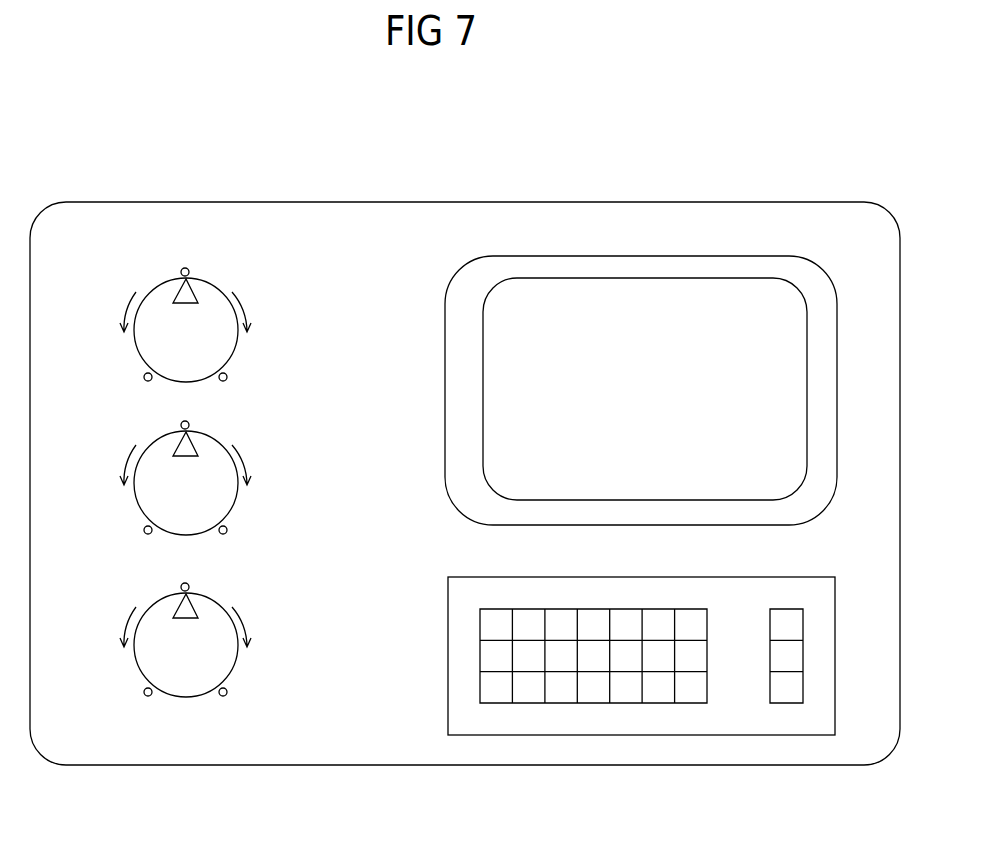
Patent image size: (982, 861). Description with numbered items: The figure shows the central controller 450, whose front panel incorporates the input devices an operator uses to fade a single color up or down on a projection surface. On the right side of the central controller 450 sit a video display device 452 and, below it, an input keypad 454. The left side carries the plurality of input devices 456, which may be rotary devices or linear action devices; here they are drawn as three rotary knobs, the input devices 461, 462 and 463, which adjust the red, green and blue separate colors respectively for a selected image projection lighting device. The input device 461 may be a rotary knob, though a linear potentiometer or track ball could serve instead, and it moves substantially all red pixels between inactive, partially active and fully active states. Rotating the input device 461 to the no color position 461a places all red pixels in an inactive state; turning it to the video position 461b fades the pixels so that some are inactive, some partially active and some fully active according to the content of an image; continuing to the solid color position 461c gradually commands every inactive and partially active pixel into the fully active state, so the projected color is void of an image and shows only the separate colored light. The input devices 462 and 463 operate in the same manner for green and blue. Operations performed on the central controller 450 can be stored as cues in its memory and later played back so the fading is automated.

The central controller 450 is at (307, 190).
The video display device 452 is at (642, 245).
The input keypad 454 is at (610, 740).
The input devices 456 is at (343, 305).
The input device 461 is at (103, 305).
The no color position 461a is at (98, 367).
The video position 461b is at (230, 239).
The solid color position 461c is at (247, 367).
The input device 462 is at (105, 462).
The input device 463 is at (113, 617).